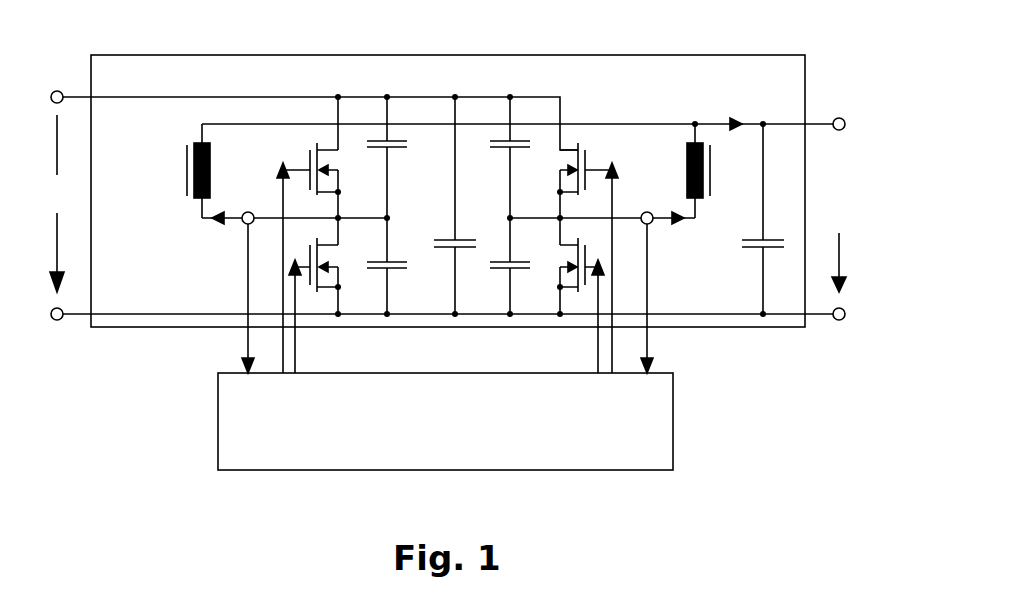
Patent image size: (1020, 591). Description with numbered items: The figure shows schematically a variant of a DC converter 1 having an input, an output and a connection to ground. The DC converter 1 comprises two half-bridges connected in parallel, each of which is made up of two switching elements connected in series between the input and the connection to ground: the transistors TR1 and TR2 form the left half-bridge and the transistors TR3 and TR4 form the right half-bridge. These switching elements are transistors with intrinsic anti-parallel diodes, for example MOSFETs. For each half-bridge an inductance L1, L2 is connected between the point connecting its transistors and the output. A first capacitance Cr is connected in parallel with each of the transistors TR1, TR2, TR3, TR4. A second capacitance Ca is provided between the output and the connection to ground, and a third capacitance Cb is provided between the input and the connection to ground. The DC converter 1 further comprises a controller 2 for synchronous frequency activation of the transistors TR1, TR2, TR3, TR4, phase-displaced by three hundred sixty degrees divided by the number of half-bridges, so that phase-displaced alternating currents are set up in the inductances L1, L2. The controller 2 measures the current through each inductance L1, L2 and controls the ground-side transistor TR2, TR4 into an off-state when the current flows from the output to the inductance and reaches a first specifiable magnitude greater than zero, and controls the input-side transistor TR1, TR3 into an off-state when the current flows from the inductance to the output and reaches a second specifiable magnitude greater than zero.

The DC converter 1 is at (461, 190).
The controller 2 is at (658, 430).
The inductance L1 is at (185, 171).
The inductance L2 is at (712, 171).
The first capacitance Cr is at (448, 205).
The third capacitance Cb is at (450, 205).
The second capacitance Ca is at (758, 219).
The transistor TR1 is at (299, 235).
The transistor TR2 is at (315, 295).
The transistor TR3 is at (596, 258).
The transistor TR4 is at (576, 295).